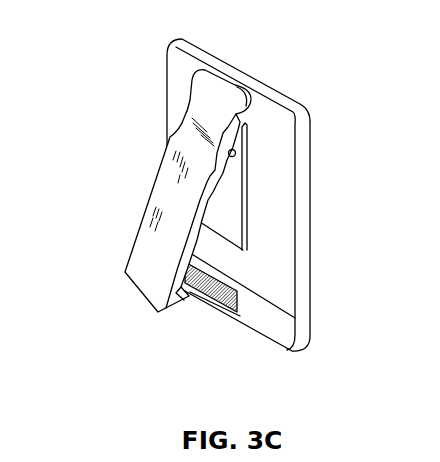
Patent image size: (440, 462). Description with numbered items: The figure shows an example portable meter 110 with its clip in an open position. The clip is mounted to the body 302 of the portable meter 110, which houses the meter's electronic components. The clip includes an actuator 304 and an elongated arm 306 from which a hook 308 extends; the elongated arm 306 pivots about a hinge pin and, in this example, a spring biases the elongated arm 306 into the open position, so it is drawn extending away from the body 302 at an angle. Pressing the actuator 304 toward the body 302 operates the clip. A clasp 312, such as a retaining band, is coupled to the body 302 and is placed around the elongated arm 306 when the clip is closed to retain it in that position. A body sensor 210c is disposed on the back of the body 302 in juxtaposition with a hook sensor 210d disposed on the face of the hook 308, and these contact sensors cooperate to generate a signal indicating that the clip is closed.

The portable meter 110 is at (191, 199).
The body 302 is at (233, 199).
The actuator 304 is at (250, 76).
The elongated arm 306 is at (195, 197).
The hook 308 is at (150, 306).
The clasp 312 is at (250, 287).
The body sensor 210c is at (238, 292).
The hook sensor 210d is at (192, 296).